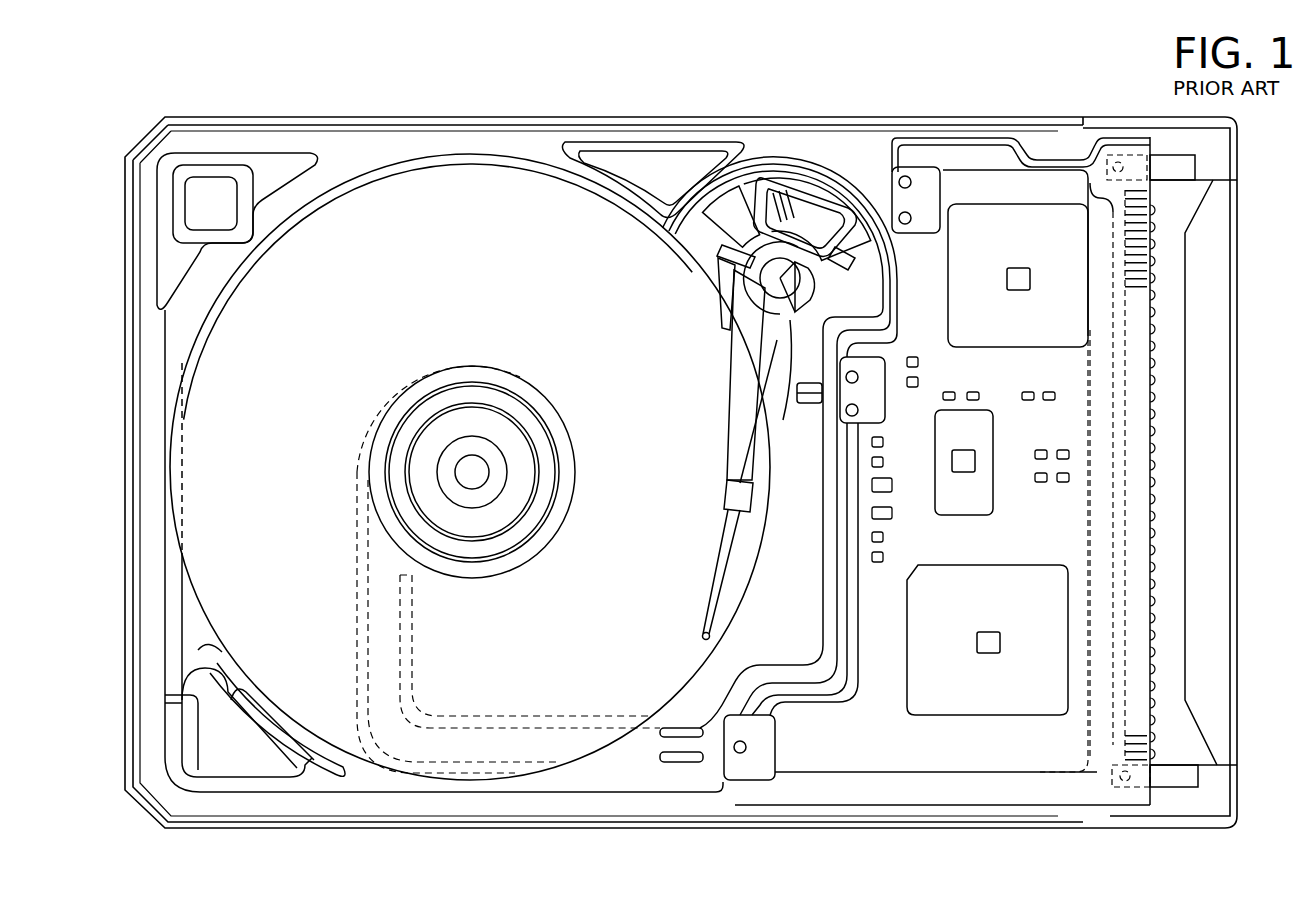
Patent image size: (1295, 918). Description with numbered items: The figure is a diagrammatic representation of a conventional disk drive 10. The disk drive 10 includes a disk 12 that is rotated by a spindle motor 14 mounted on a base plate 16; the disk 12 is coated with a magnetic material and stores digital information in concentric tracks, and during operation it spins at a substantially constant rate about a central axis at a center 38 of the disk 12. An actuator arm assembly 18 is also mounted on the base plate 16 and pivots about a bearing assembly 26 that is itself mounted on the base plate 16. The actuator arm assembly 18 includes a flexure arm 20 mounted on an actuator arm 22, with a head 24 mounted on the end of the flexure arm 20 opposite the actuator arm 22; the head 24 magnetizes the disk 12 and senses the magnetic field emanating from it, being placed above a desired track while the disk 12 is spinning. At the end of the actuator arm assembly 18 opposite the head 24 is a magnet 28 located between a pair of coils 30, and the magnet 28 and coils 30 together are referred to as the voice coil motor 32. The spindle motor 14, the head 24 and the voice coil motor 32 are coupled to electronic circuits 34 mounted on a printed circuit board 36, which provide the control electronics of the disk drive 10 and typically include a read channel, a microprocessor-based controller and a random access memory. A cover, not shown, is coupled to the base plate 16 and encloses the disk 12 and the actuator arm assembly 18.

The disk drive 10 is at (930, 108).
The disk 12 is at (528, 637).
The spindle motor 14 is at (402, 423).
The base plate 16 is at (352, 145).
The actuator arm assembly 18 is at (730, 404).
The flexure arm 20 is at (723, 555).
The actuator arm 22 is at (738, 452).
The head 24 is at (703, 637).
The bearing assembly 26 is at (733, 278).
The magnet 28 is at (800, 212).
The coils 30 is at (823, 197).
The voice coil motor 32 is at (745, 255).
The electronic circuits 34 is at (1030, 325).
The printed circuit board 36 is at (842, 750).
The center 38 is at (472, 472).